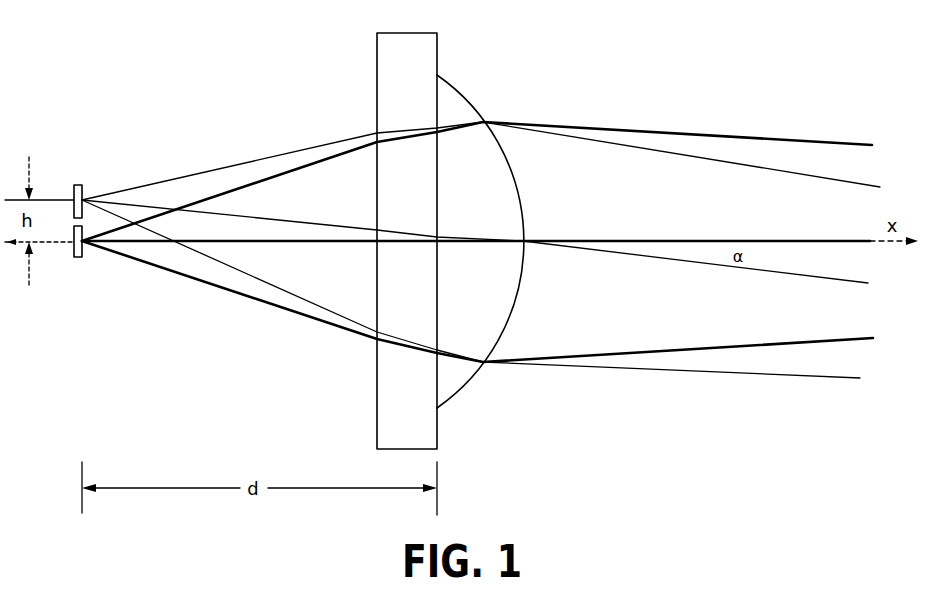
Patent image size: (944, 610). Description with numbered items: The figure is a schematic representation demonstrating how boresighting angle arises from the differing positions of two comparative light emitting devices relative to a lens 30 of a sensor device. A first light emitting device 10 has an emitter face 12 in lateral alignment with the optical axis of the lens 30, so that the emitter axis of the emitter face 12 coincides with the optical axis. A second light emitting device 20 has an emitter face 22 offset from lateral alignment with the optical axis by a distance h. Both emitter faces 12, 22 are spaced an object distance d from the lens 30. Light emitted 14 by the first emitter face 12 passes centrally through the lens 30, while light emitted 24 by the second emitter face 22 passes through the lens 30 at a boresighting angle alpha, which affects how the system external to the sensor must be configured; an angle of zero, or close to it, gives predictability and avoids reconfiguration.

The first light emitting device 10 is at (78, 258).
The emitter face 12 is at (84, 252).
The light emitted 14 is at (121, 262).
The second light emitting device 20 is at (78, 185).
The emitter face 22 is at (85, 193).
The light emitted 24 is at (123, 184).
The lens 30 is at (389, 402).